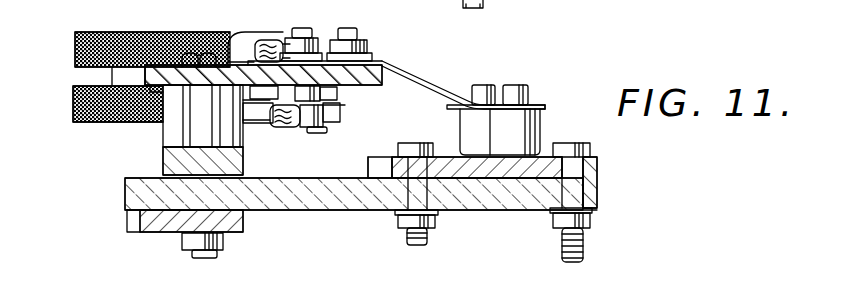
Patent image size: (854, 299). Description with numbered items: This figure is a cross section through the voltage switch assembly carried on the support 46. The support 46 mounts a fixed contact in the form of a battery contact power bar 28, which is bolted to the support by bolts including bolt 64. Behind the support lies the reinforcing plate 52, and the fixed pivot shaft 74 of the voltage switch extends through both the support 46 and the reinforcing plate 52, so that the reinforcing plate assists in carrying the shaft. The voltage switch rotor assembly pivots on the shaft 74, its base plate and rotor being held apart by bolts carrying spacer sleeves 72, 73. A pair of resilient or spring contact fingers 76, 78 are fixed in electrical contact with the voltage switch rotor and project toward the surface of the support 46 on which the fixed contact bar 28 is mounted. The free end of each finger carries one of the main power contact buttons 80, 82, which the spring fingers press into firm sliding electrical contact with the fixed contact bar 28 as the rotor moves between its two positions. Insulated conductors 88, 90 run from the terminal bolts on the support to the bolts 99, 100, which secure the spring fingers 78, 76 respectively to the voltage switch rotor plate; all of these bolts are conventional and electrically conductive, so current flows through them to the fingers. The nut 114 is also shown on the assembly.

The battery contact power bar 28 is at (598, 170).
The support 46 is at (133, 197).
The reinforcing plate 52 is at (158, 233).
The bolt 64 is at (588, 148).
The spacer sleeve 72 is at (160, 108).
The spacer sleeve 73 is at (245, 130).
The shaft 74 is at (197, 132).
The resilient contact finger 76 is at (420, 92).
The resilient contact finger 78 is at (433, 80).
The main power contact button 80 is at (465, 123).
The main power contact button 82 is at (540, 124).
The insulated conductor 88 is at (118, 8).
The insulated conductor 90 is at (96, 122).
The bolt 99 is at (300, 28).
The bolt 100 is at (320, 130).
The terminal nut 114 is at (485, 4).